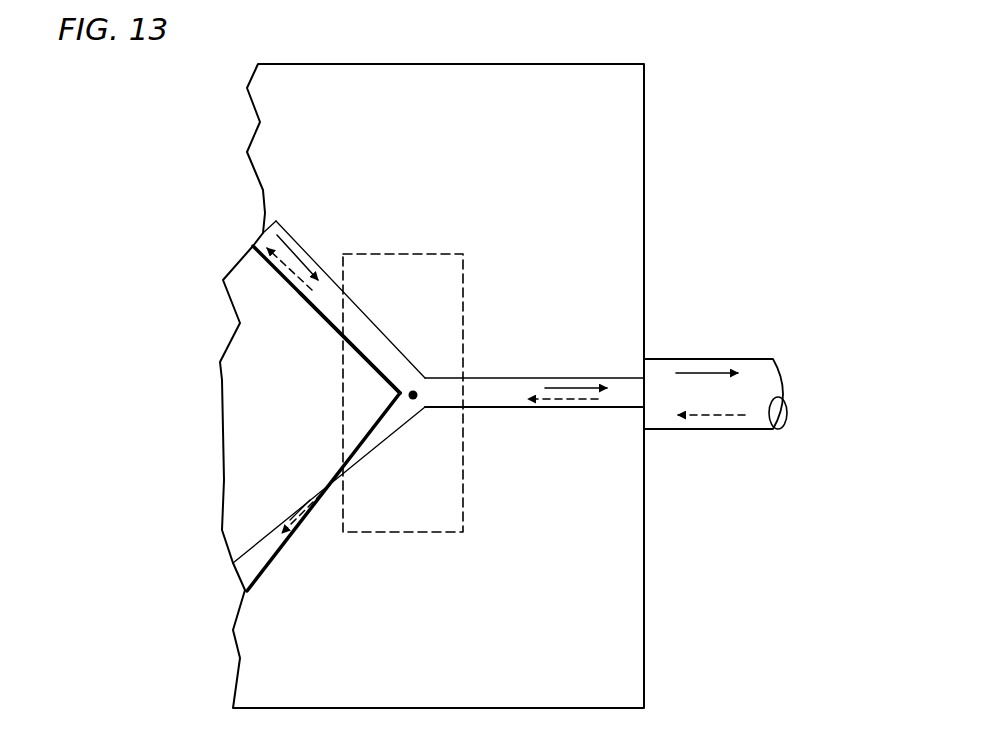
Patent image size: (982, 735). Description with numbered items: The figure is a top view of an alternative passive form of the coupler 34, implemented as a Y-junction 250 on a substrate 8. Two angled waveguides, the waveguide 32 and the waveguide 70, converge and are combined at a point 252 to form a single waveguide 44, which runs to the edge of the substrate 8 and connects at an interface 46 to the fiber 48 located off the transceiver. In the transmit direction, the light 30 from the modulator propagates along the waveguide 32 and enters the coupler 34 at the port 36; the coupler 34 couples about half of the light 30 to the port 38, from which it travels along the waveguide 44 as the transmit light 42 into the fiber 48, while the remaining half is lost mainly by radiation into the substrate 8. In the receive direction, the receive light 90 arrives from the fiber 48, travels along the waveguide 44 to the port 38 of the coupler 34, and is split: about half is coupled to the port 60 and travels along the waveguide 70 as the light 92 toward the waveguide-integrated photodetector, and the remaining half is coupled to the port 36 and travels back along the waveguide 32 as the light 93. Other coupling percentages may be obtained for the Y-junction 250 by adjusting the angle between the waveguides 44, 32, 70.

The substrate / integrated optic chip 8 is at (432, 56).
The light 30 is at (292, 240).
The waveguide 32 is at (278, 222).
The coupler 34 is at (405, 250).
The port 36 is at (340, 322).
The port 38 is at (462, 390).
The transmit light 42 is at (585, 388).
The waveguide 44 is at (618, 378).
The fiber end face / interface 46 is at (647, 392).
The fiber 48 is at (786, 412).
The port 60 is at (343, 472).
The waveguide 70 is at (300, 500).
The receive light 90 is at (558, 402).
The light 92 is at (308, 510).
The light 93 is at (292, 272).
The Y-junction 250 is at (423, 362).
The point 252 is at (412, 400).